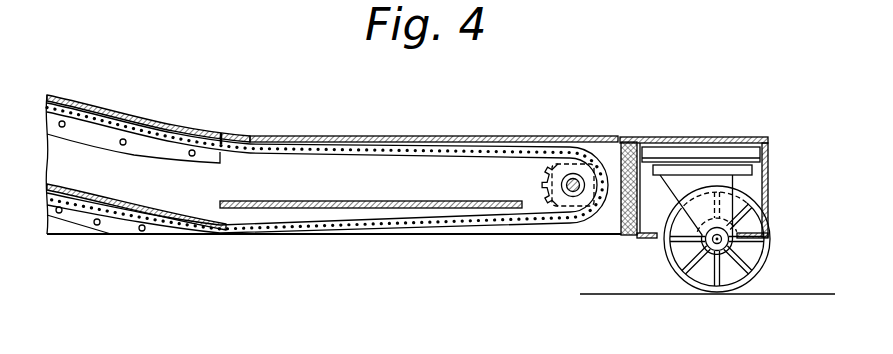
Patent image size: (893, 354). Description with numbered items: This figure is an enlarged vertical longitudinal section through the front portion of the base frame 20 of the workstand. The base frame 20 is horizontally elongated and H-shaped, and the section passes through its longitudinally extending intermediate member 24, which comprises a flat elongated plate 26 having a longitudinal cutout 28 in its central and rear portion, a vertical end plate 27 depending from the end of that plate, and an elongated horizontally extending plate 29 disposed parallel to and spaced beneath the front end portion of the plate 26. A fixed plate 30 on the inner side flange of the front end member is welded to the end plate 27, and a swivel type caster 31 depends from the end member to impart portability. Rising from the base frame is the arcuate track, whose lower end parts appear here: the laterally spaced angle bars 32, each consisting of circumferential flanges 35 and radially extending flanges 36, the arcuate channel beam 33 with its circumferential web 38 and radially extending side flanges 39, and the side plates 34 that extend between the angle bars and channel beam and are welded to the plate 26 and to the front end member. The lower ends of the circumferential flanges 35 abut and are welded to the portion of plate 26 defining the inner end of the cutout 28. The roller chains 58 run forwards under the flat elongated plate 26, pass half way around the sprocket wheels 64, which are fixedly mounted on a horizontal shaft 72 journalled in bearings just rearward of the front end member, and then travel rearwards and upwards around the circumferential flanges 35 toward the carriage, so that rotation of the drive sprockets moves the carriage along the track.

The base frame 20 is at (386, 130).
The intermediate member 24 is at (311, 134).
The flat elongated plate 26 is at (522, 138).
The end plates 27 is at (620, 219).
The cutout 28 is at (222, 134).
The elongated horizontally extending plate 29 is at (363, 209).
The fixed plates 30 is at (623, 162).
The swivel type casters 31 is at (690, 284).
The angle bars 32 is at (88, 130).
The arcuate channel beam 33 is at (113, 228).
The side plates 34 is at (70, 234).
The circumferential flanges 35 is at (190, 135).
The radially extending flanges 36 is at (160, 158).
The circumferential web 38 is at (172, 222).
The side flanges 39 is at (156, 233).
The roller chains 58 is at (441, 149).
The sprocket wheels 64 is at (540, 178).
The horizontal shaft 72 is at (568, 193).